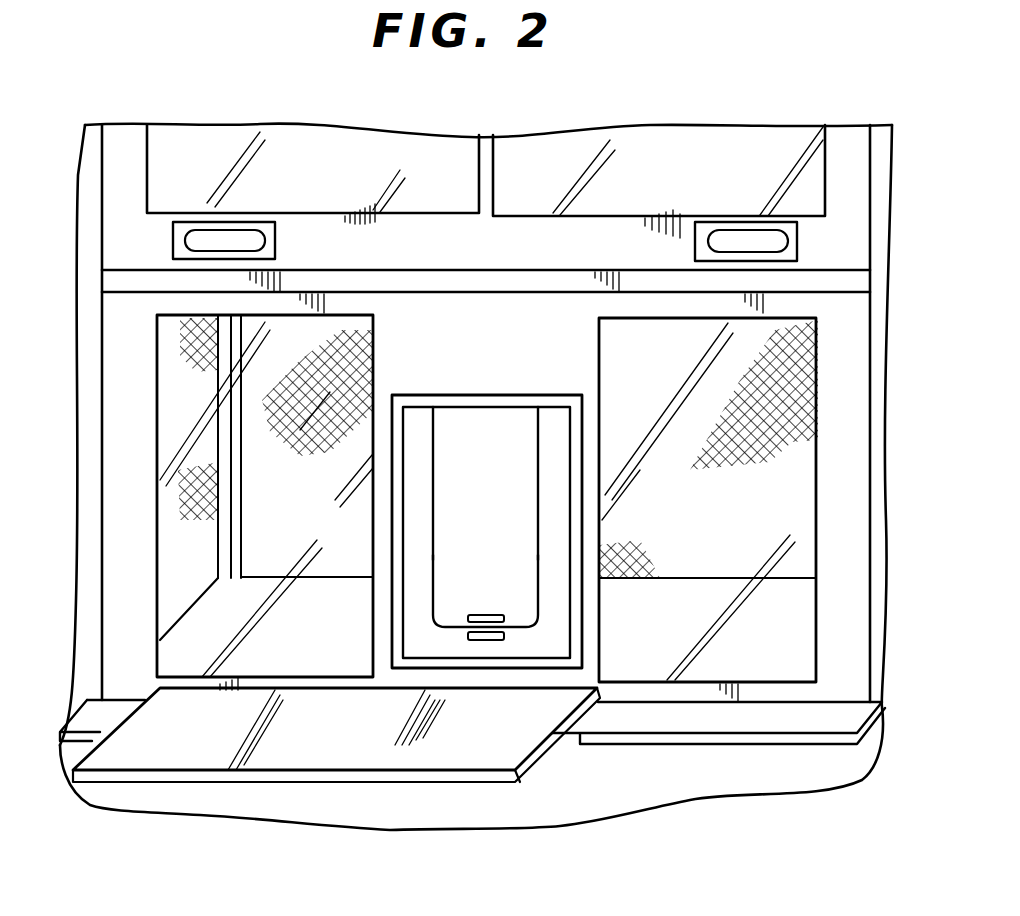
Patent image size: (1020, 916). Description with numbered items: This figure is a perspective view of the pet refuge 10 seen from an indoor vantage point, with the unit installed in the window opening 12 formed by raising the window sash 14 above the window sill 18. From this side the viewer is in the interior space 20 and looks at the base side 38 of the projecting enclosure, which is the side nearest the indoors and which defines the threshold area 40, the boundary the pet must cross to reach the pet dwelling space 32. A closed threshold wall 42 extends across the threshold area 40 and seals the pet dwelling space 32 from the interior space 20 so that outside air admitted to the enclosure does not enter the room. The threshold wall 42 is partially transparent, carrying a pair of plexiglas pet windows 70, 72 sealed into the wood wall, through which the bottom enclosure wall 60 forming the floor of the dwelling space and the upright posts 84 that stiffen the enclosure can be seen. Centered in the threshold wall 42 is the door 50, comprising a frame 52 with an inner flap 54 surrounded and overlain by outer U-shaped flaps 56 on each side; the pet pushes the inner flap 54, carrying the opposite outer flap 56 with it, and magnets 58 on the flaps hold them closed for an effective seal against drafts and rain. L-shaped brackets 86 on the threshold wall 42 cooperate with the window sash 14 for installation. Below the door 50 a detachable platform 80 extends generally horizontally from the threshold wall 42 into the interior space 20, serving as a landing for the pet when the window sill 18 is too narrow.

The pet refuge 10 is at (883, 343).
The window opening 12 is at (859, 293).
The window sash 14 is at (517, 228).
The window sill 18 is at (848, 725).
The interior space 20 is at (567, 813).
The pet dwelling space 32 is at (633, 657).
The base side 38 is at (457, 318).
The threshold area 40 is at (115, 487).
The threshold wall 42 is at (850, 472).
The door 50 is at (524, 630).
The frame 52 is at (550, 400).
The inner flap 54 is at (502, 435).
The outer U-shaped flap 56 is at (417, 440).
The magnets 58 is at (495, 612).
The bottom enclosure wall 60 is at (328, 640).
The pet window 70 is at (800, 633).
The pet window 72 is at (180, 595).
The platform 80 is at (163, 760).
The upright posts 84 is at (222, 355).
The L-shaped brackets 86 is at (343, 290).